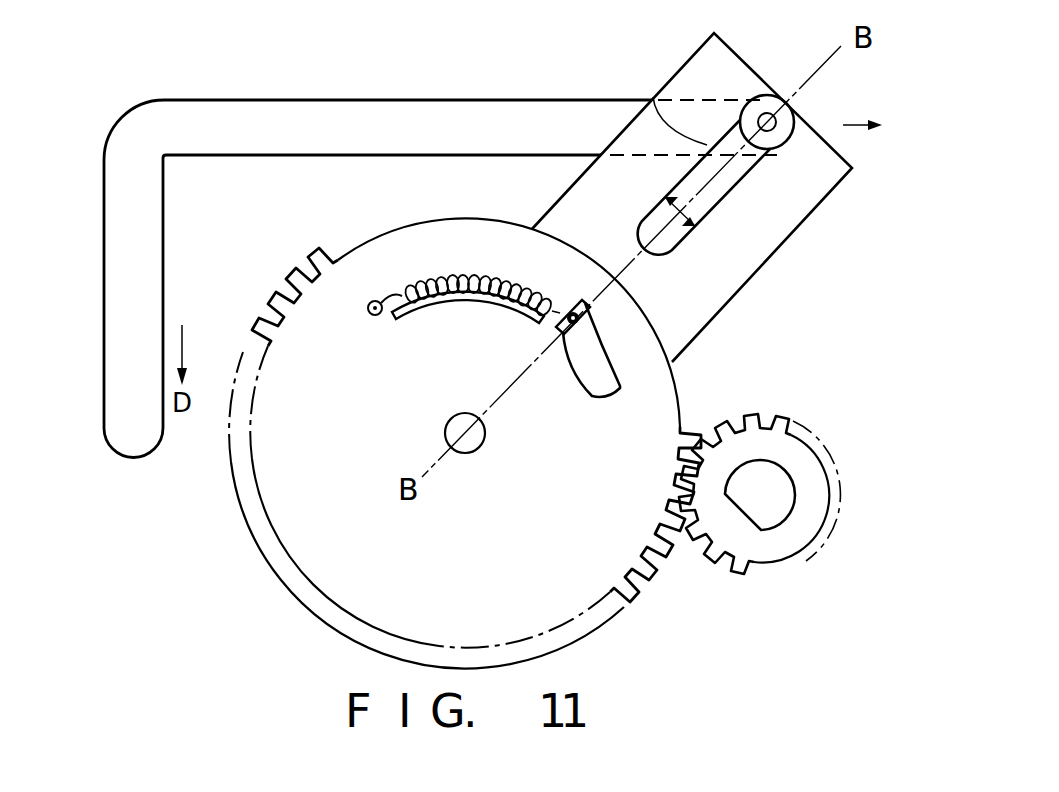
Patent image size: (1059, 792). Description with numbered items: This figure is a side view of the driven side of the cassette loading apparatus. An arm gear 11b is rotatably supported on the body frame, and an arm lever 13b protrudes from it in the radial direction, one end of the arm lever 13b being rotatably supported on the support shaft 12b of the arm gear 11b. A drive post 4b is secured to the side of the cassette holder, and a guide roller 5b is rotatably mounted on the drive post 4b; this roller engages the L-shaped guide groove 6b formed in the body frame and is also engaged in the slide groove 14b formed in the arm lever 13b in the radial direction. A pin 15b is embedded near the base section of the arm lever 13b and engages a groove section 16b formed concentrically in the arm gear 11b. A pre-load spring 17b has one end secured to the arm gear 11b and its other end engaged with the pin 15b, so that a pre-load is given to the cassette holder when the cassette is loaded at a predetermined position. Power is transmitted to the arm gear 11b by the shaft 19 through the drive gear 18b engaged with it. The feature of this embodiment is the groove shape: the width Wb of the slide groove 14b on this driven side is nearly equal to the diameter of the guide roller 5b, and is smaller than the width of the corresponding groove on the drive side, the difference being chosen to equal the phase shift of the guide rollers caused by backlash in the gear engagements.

The drive post 4b is at (768, 110).
The guide roller 5b is at (787, 130).
The L-shaped guide groove 6b is at (132, 173).
The arm gear 11b is at (377, 597).
The support shaft 12b is at (477, 435).
The arm lever 13b is at (742, 268).
The slide groove 14b is at (653, 97).
The pin 15b is at (580, 323).
The groove section 16b is at (608, 377).
The pre-load spring 17b is at (428, 283).
The drive gear 18b is at (796, 553).
The shaft 19 is at (780, 483).
The width of the slide groove Wb is at (693, 197).